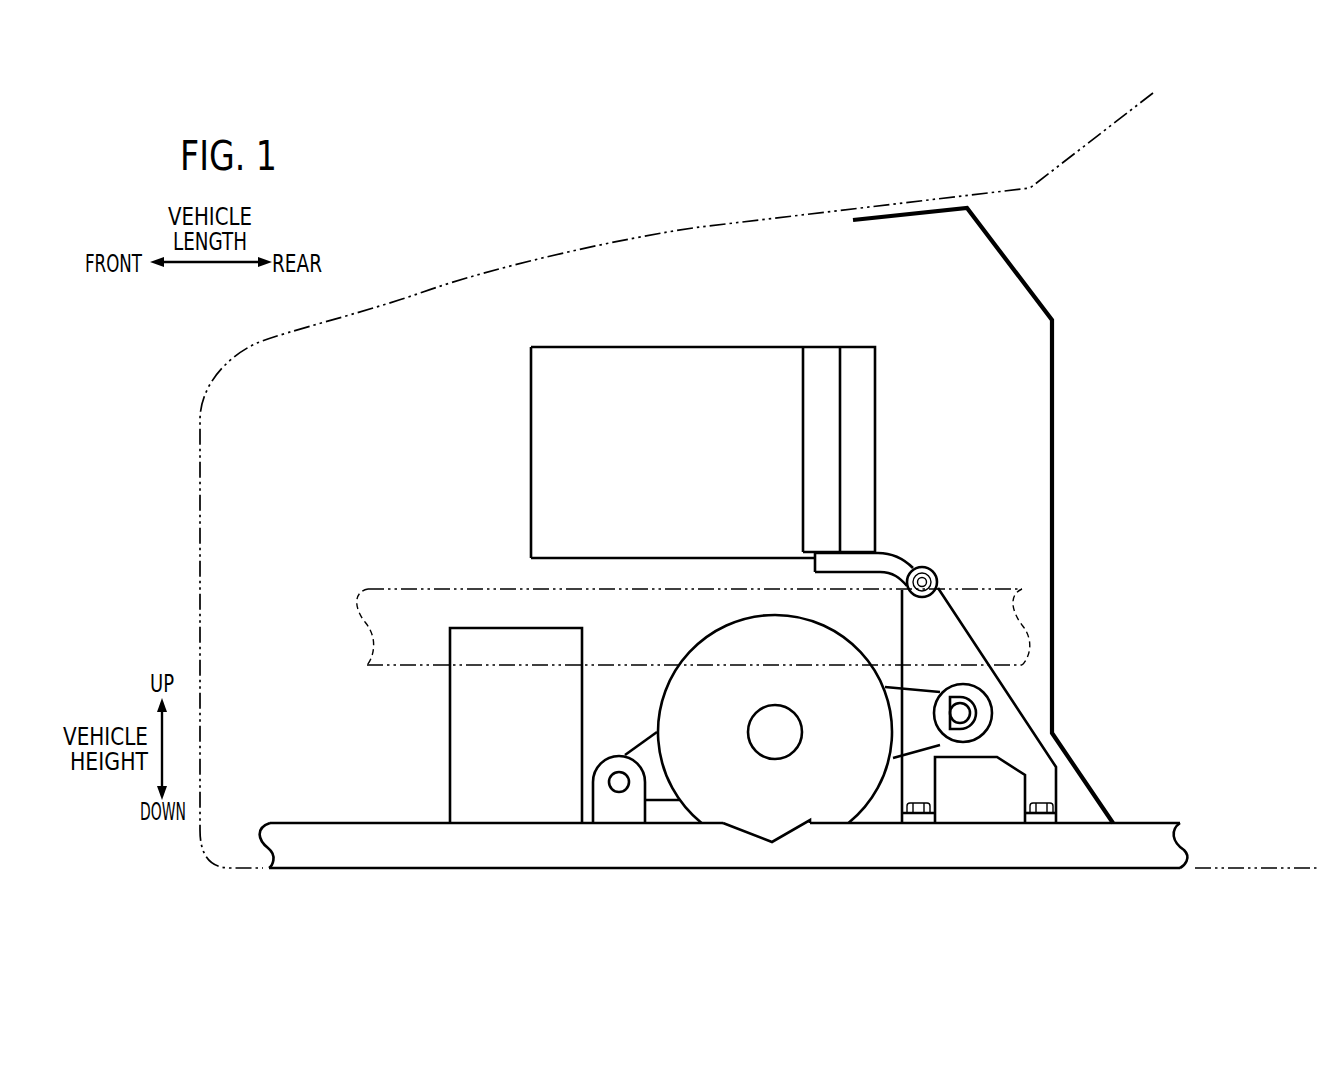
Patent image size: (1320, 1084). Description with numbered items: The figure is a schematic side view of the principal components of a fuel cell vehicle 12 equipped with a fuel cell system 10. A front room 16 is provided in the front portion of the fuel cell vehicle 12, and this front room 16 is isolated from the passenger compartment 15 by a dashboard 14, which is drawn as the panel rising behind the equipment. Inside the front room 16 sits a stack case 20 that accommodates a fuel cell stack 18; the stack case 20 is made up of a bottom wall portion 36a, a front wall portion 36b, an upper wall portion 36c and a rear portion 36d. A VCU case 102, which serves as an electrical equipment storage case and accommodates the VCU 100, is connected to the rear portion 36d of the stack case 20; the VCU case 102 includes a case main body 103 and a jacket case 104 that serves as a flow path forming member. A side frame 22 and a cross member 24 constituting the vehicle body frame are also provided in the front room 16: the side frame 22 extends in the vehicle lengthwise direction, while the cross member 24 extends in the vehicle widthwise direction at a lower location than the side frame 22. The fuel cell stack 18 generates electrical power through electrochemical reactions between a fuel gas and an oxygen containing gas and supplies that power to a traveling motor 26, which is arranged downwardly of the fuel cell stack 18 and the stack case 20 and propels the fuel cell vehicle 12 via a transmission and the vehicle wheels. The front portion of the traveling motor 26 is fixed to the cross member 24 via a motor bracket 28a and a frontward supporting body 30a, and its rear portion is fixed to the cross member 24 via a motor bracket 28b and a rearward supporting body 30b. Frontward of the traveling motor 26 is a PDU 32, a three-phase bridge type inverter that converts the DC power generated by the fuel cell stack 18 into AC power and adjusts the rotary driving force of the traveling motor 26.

The fuel cell system 10 is at (691, 456).
The fuel cell vehicle 12 is at (203, 353).
The dashboard 14 is at (1054, 356).
The passenger compartment 15 is at (1100, 193).
The front room 16 is at (787, 248).
The fuel cell stack 18 is at (555, 468).
The stack case 20 is at (557, 515).
The side frame 22 is at (402, 603).
The cross member 24 is at (330, 836).
The traveling motor 26 is at (817, 810).
The motor bracket 28a is at (647, 752).
The motor bracket 28b is at (912, 713).
The frontward supporting body 30a is at (605, 798).
The rearward supporting body 30b is at (1008, 715).
The PDU 32 is at (450, 716).
The bottom wall portion 36a is at (638, 560).
The front wall portion 36b is at (531, 384).
The upper wall portion 36c is at (641, 346).
The rear portion 36d is at (803, 388).
The VCU 100 is at (842, 472).
The VCU case 102 is at (873, 416).
The case main body 103 is at (852, 417).
The jacket case 104 is at (818, 360).